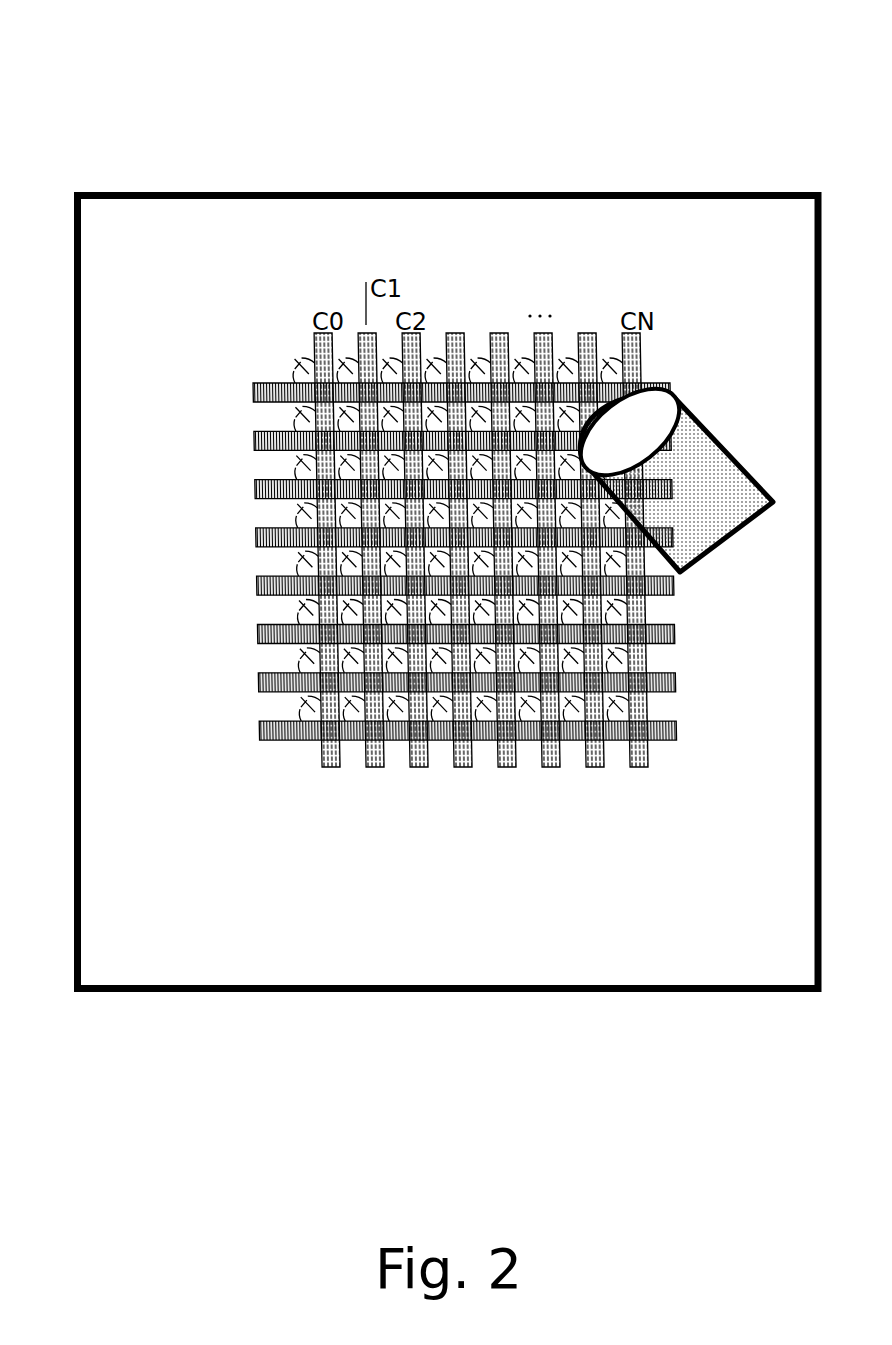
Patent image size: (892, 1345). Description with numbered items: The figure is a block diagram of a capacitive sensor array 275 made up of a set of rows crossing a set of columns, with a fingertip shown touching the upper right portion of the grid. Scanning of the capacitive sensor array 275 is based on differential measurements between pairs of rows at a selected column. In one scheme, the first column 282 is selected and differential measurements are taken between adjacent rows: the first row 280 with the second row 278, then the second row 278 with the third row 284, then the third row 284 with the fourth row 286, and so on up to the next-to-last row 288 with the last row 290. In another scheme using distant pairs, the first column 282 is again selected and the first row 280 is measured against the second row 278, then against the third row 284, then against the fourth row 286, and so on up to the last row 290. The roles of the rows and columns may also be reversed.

The capacitive sensor array 275 is at (72, 42).
The column C0 282 is at (322, 300).
The row R0 280 is at (205, 393).
The row R1 278 is at (205, 448).
The row R2 284 is at (205, 496).
The row R3 286 is at (205, 544).
The row R(N-1) 288 is at (197, 698).
The row RN 290 is at (197, 750).